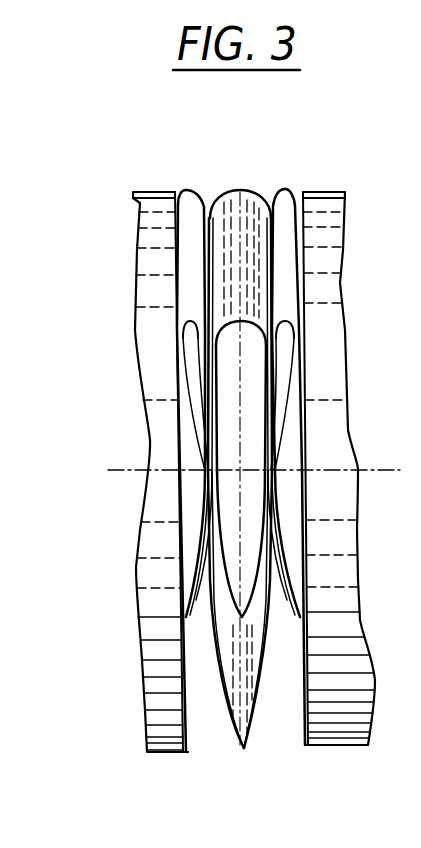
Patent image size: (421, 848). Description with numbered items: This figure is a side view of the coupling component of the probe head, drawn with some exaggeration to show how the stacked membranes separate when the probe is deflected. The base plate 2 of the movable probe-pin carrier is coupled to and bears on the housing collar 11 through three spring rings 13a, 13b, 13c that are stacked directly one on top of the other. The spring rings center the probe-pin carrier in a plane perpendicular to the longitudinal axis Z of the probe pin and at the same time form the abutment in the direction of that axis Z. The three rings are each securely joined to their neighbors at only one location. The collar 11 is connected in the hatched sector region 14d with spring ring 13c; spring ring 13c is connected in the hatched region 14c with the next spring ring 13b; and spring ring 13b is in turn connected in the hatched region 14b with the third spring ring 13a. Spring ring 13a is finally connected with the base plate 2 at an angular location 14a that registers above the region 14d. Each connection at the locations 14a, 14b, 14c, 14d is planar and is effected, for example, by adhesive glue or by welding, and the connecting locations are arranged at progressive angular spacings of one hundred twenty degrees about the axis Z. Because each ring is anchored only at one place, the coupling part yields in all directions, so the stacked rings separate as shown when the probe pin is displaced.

The base plate 2 is at (140, 201).
The housing collar 11 is at (347, 197).
The spring ring 13a is at (184, 193).
The spring ring 13b is at (248, 738).
The spring ring 13c is at (285, 188).
The connecting location 14a is at (188, 727).
The connecting region 14b is at (208, 194).
The connecting region 14c is at (267, 194).
The connecting sector region 14d is at (303, 727).
The longitudinal axis Z is at (377, 470).